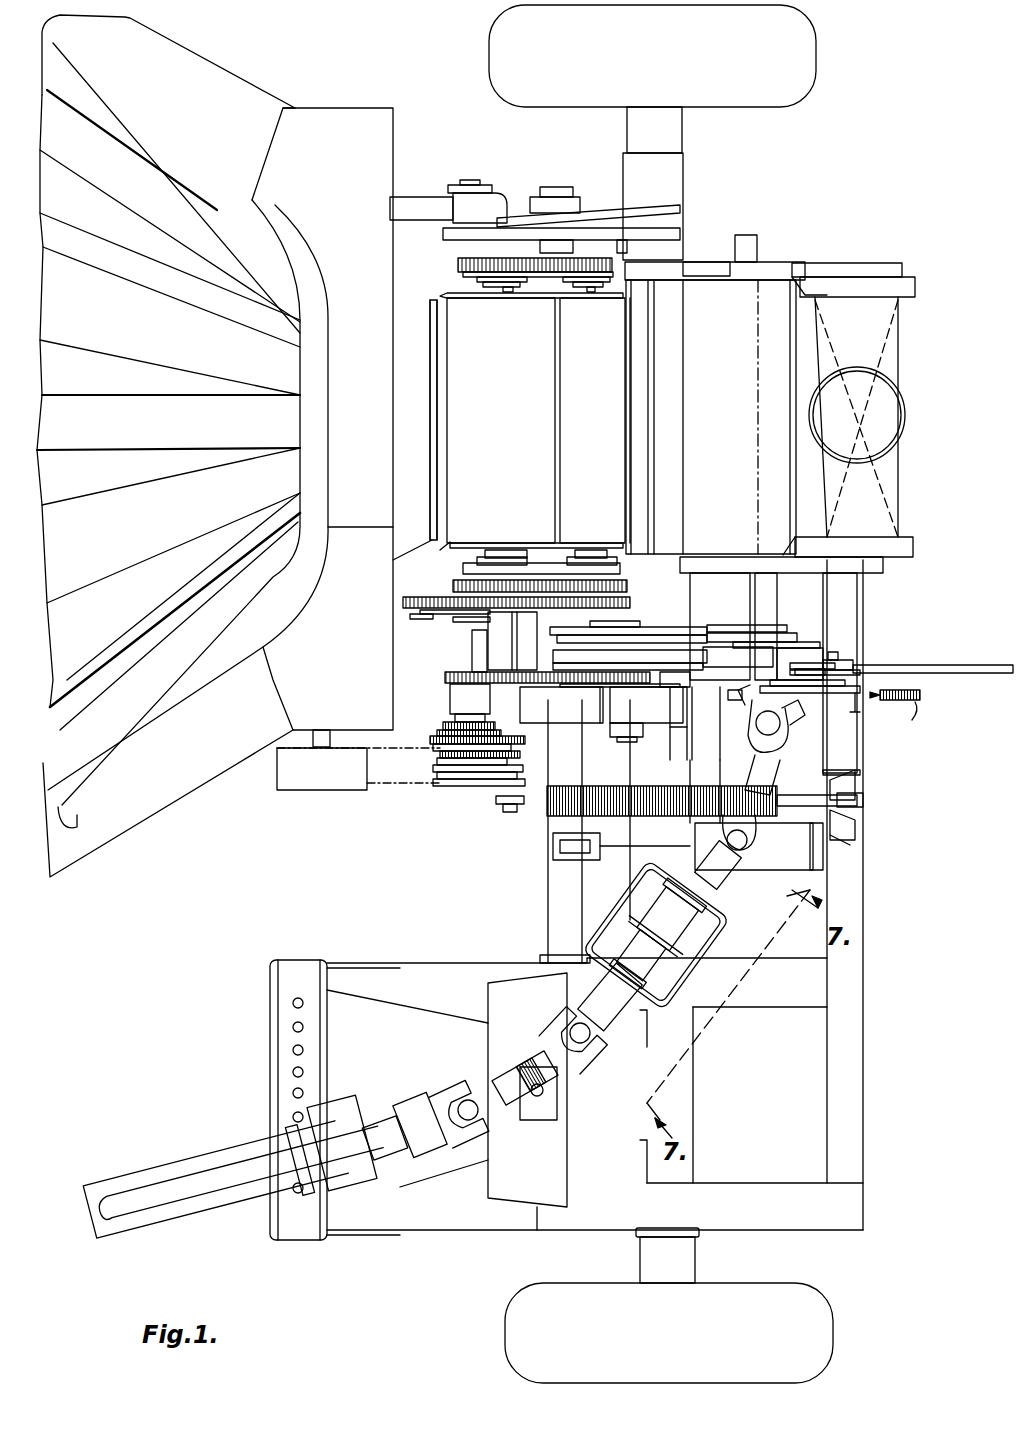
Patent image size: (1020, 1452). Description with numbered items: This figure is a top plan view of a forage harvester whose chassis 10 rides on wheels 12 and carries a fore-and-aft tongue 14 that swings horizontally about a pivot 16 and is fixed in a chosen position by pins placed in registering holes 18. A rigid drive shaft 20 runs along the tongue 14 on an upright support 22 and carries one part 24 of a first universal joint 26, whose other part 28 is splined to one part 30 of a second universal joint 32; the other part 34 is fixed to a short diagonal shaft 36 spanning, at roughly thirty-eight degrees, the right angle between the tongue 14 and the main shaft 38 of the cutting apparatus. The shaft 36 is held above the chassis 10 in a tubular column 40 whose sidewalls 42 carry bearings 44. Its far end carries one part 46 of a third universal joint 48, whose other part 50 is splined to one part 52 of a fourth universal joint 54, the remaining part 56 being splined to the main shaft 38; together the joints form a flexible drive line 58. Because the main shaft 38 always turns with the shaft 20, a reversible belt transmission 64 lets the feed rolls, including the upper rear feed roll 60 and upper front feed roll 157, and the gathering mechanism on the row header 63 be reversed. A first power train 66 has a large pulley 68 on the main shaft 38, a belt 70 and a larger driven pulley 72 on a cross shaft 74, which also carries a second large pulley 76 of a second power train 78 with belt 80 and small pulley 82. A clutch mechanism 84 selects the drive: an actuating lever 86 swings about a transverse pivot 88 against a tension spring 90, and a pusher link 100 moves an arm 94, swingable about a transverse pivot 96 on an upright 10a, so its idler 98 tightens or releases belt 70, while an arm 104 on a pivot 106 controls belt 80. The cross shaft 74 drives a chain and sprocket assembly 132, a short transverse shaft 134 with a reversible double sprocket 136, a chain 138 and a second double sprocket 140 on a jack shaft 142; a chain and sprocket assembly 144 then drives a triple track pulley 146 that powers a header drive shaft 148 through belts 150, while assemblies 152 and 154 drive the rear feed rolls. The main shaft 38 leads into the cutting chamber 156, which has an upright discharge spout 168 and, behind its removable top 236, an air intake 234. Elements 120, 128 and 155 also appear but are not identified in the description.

The chassis 10 is at (863, 1078).
The upright 10a is at (857, 710).
The wheels 12 is at (812, 36).
The tongue 14 is at (138, 1170).
The pivot 16 is at (545, 1093).
The registering holes 18 is at (292, 1072).
The drive shaft 20 is at (165, 1218).
The upright support 22 is at (378, 1100).
The part of first universal joint 24 is at (440, 1145).
The first universal joint 26 is at (452, 1082).
The other part of first universal joint 28 is at (505, 1078).
The part of second universal joint 30 is at (555, 1035).
The second universal joint 32 is at (600, 1048).
The other part of second universal joint 34 is at (610, 1020).
The short shaft 36 is at (648, 930).
The main shaft 38 is at (765, 582).
The tubular column 40 is at (710, 932).
The sidewalls 42 is at (655, 865).
The bearings 44 is at (690, 915).
The part of third universal joint 46 is at (715, 882).
The third universal joint 48 is at (755, 855).
The other part of third universal joint 50 is at (760, 828).
The part of fourth universal joint 52 is at (745, 766).
The fourth universal joint 54 is at (790, 752).
The other part of fourth universal joint 56 is at (752, 735).
The flexible drive line 58 is at (510, 1125).
The upper rear feed roll 60 is at (575, 380).
The row header 63 is at (230, 80).
The reversible belt transmission 64 is at (730, 600).
The first belt and pulley power train 66 is at (540, 668).
The large pulley member 68 is at (812, 670).
The endless belt element 70 is at (585, 668).
The larger driven pulley member 72 is at (556, 675).
The cross shaft 74 is at (613, 732).
The second large pulley member 76 is at (603, 673).
The second power train 78 is at (636, 627).
The endless flexible belt element 80 is at (702, 632).
The small pulley member 82 is at (770, 645).
The clutch mechanism 84 is at (850, 671).
The actuating lever 86 is at (922, 696).
The transverse pivot 88 is at (855, 662).
The tension spring 90 is at (912, 722).
The arm 94 is at (745, 712).
The transverse pivot 96 is at (778, 722).
The idler 98 is at (730, 690).
The pusher link 100 is at (840, 655).
The arm 104 is at (805, 650).
The pivot 106 is at (845, 760).
The shaft 120 is at (672, 720).
The frame block 128 is at (660, 680).
The chain and sprocket assembly 132 is at (445, 680).
The short transverse shaft 134 is at (548, 780).
The reversible double sprocket 136 is at (490, 770).
The chain 138 is at (445, 745).
The second double sprocket 140 is at (440, 778).
The jack shaft 142 is at (470, 655).
The chain and sprocket assembly 144 is at (448, 720).
The triple track pulley 146 is at (455, 795).
The drive shaft 148 is at (322, 730).
The belts 150 is at (372, 795).
The chain and sprocket assembly 152 is at (410, 600).
The chain and sprocket assembly 154 is at (460, 573).
The gear 155 is at (466, 262).
The cutting chamber 156 is at (858, 268).
The upper front feed roll 157 is at (452, 352).
The discharge spout 168 is at (882, 362).
The air intake 234 is at (790, 385).
The removable top 236 is at (700, 300).